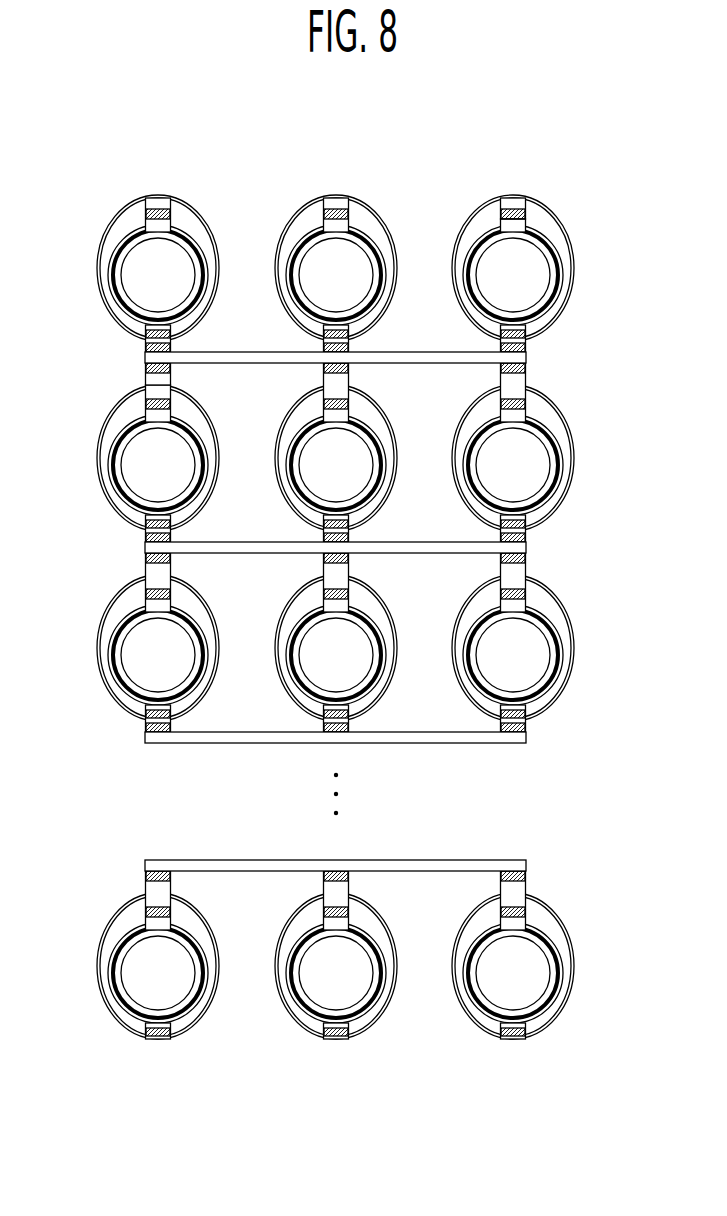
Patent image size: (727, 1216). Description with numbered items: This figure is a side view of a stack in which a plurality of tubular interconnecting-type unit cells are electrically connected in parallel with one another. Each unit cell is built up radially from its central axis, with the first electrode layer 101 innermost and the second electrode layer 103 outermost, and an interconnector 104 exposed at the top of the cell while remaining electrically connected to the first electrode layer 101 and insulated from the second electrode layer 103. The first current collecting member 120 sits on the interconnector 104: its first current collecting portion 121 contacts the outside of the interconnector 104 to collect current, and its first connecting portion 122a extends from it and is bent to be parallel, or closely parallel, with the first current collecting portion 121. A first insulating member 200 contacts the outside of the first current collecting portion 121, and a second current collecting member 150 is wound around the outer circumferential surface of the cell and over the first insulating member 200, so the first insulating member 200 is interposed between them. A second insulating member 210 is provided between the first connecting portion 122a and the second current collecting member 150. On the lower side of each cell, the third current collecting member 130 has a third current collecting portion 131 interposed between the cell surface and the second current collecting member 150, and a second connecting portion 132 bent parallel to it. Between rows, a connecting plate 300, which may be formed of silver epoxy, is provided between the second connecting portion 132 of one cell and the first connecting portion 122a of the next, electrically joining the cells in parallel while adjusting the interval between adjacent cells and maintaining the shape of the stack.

The first electrode layer 101 is at (558, 282).
The second electrode layer 103 is at (567, 255).
The interconnector 104 is at (507, 226).
The first current collecting member 120 is at (617, 360).
The first current collecting portion 121 is at (527, 213).
The first connecting portion 122a is at (525, 371).
The third current collecting member 130 is at (617, 305).
The third current collecting portion 131 is at (514, 332).
The second connecting portion 132 is at (512, 347).
The second current collecting member 150 is at (532, 198).
The first insulating member 200 is at (507, 203).
The second insulating member 210 is at (145, 380).
The connecting plate 300 is at (143, 357).